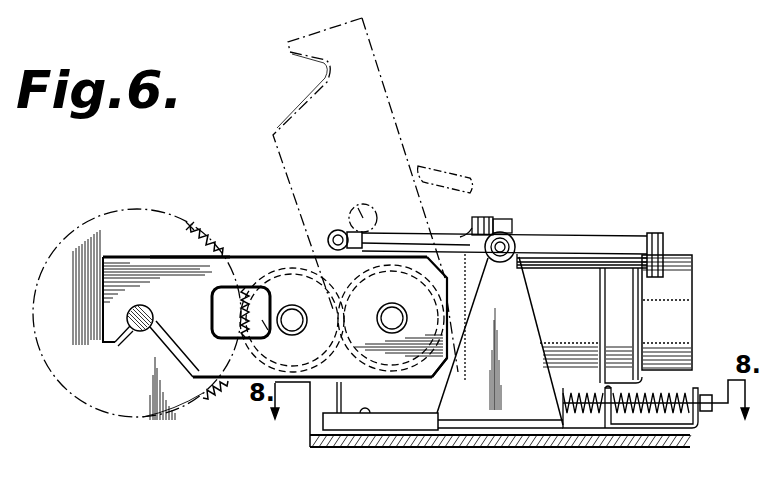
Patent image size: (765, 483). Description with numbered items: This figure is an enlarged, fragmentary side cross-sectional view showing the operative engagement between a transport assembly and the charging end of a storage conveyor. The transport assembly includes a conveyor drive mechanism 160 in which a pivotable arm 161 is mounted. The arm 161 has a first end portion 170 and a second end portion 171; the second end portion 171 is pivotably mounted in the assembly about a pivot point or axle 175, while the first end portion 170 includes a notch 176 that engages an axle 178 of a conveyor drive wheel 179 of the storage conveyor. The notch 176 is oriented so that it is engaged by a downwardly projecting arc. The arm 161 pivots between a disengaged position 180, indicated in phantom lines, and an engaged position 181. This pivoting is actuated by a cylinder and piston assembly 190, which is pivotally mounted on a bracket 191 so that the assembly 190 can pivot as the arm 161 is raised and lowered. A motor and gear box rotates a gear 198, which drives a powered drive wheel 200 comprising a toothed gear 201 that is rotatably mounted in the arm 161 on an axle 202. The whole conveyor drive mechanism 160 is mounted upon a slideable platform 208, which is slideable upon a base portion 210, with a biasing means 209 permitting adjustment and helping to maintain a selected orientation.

The conveyor drive mechanism 160 is at (684, 298).
The pivotable arm 161 is at (107, 259).
The first end portion 170 is at (150, 259).
The second end portion 171 is at (423, 373).
The pivot point or axle 175 is at (393, 319).
The notch 176 is at (180, 363).
The axle 178 is at (140, 333).
The conveyor drive wheel 179 is at (195, 226).
The disengaged position 180 is at (386, 90).
The engaged position 181 is at (248, 257).
The cylinder and piston assembly 190 is at (567, 244).
The bracket 191 is at (535, 334).
The gear 198 is at (425, 286).
The powered drive wheel 200 is at (243, 337).
The toothed gear 201 is at (263, 332).
The axle 202 is at (292, 318).
The slideable platform 208 is at (452, 432).
The biasing means 209 is at (658, 414).
The base portion 210 is at (613, 444).